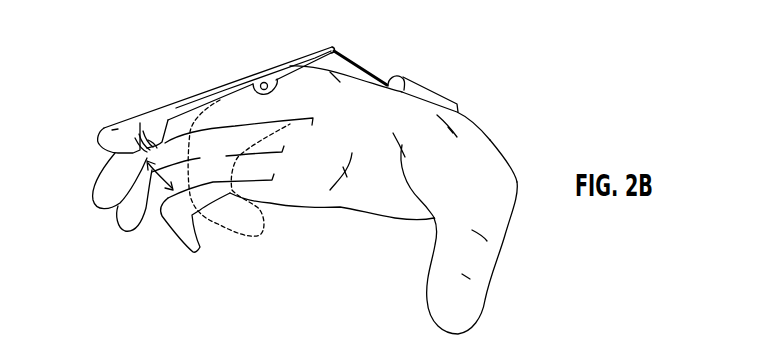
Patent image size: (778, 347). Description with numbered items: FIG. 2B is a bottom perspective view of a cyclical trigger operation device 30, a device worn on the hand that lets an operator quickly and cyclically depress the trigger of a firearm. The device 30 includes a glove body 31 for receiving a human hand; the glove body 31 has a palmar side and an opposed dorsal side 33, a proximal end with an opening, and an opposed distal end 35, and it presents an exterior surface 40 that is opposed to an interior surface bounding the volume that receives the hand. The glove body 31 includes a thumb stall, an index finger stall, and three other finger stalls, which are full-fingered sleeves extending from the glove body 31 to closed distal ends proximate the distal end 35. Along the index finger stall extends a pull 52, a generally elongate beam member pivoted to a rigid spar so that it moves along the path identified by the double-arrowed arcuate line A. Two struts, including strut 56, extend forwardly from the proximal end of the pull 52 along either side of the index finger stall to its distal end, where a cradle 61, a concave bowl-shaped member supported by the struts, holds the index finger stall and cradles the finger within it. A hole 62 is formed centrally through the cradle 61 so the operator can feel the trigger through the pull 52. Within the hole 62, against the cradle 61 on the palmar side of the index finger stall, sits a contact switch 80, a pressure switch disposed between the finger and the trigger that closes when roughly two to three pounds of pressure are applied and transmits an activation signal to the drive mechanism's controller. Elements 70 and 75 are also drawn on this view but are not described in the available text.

The cyclical trigger operation device 30 is at (532, 60).
The glove body 31 is at (492, 140).
The dorsal side 33 is at (367, 183).
The distal end 35 is at (98, 140).
The exterior surface 40 is at (482, 184).
The pull 52 is at (211, 100).
The strut 56 is at (297, 62).
The cradle 61 is at (113, 151).
The hole 62 is at (149, 150).
The strap band 70 is at (431, 88).
The arm 75 is at (383, 75).
The contact switch 80 is at (160, 146).
The double-arrowed arcuate line A is at (149, 165).